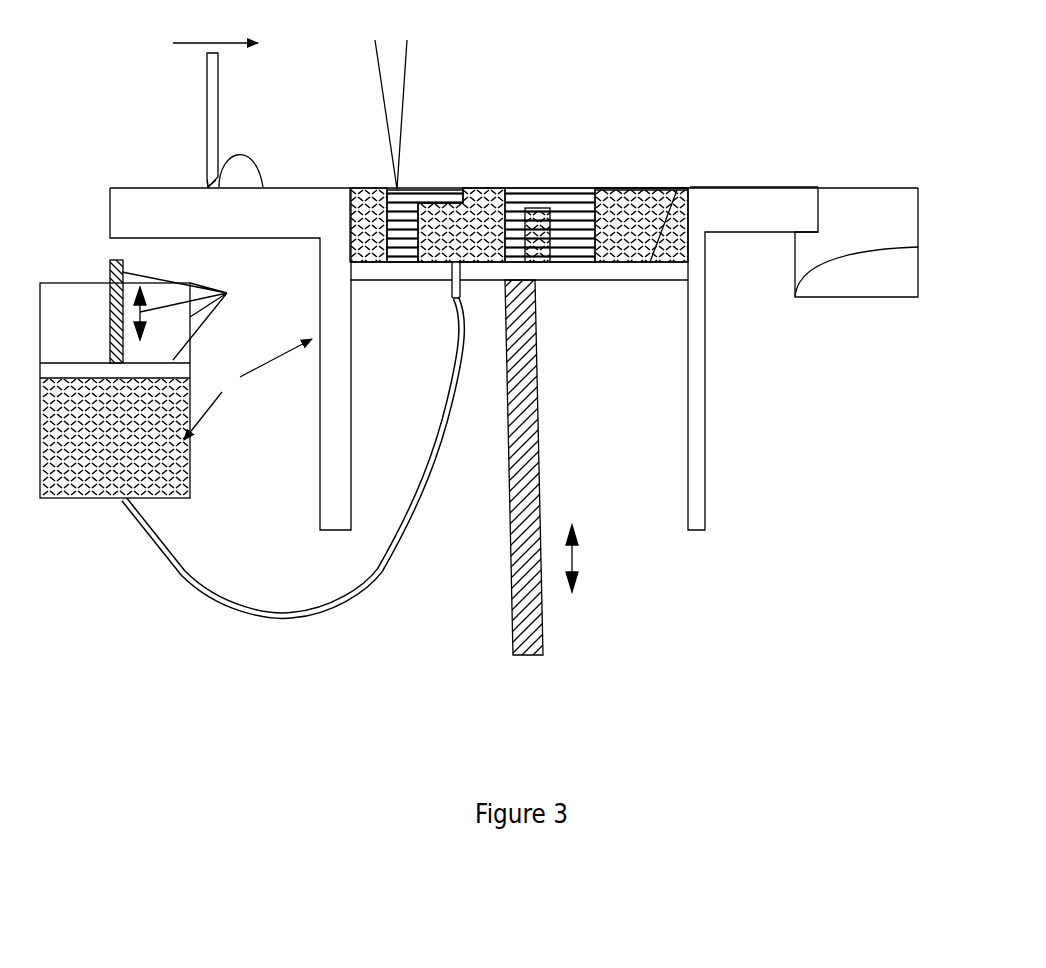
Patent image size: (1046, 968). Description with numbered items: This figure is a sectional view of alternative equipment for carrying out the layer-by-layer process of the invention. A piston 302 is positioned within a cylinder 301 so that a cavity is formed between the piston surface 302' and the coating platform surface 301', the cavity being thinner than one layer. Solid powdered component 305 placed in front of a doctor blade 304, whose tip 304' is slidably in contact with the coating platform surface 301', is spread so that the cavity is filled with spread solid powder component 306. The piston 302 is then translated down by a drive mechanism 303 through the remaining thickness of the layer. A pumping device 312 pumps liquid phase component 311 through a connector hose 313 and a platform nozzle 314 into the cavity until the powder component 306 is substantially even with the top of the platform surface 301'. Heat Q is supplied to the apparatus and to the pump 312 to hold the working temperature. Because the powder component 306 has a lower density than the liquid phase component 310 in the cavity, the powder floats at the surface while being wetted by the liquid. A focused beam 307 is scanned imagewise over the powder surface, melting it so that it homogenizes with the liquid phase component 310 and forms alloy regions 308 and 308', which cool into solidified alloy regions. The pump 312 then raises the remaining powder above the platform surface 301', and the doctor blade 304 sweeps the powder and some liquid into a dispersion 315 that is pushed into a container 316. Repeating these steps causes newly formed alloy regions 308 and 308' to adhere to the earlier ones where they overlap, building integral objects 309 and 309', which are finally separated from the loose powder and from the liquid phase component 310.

The cylinder 301 is at (514, 359).
The coating platform surface 301' is at (754, 146).
The piston 302 is at (519, 325).
The piston surface 302' is at (669, 177).
The drive mechanism 303 is at (542, 485).
The doctor blade 304 is at (169, 111).
The tip 304' is at (158, 152).
The solid powdered component 305 is at (247, 153).
The spread solid powder component 306 is at (610, 187).
The focused beam 307 is at (401, 82).
The alloy region 308 is at (435, 188).
The alloy region 308' is at (551, 189).
The integral object 309 is at (408, 197).
The integral object 309' is at (509, 202).
The liquid phase component 310 is at (645, 190).
The liquid phase component 311 is at (145, 467).
The pumping device 312 is at (190, 311).
The connector hose 313 is at (197, 572).
The platform nozzle 314 is at (452, 290).
The dispersion 315 is at (873, 298).
The container 316 is at (793, 252).
The heat Q is at (248, 389).